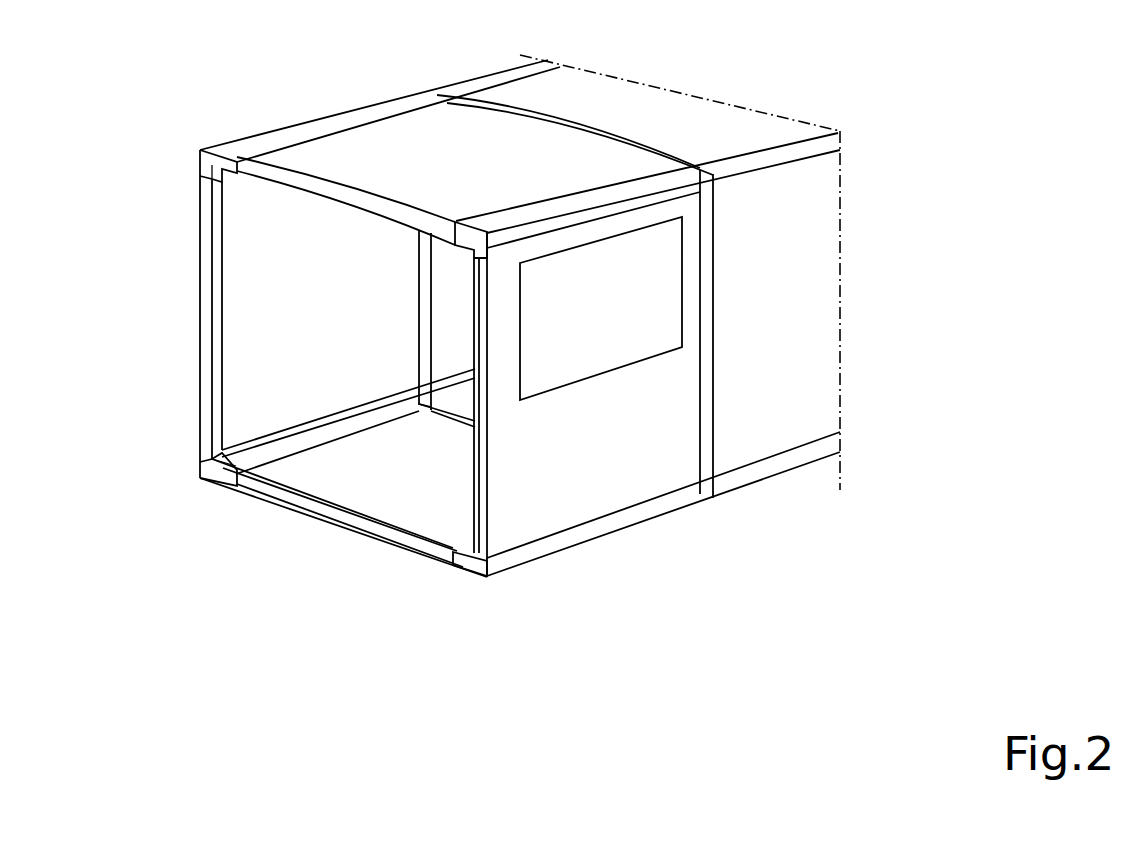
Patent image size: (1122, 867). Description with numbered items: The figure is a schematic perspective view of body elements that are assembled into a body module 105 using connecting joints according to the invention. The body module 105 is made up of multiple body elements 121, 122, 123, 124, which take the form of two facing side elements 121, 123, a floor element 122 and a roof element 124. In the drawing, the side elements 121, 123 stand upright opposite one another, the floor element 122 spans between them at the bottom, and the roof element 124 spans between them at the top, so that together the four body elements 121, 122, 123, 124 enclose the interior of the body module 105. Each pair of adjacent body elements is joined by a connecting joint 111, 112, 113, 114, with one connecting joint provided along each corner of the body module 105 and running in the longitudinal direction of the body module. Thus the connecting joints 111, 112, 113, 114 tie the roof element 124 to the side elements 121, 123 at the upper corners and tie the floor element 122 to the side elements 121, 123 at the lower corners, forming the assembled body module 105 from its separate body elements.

The body module 105 is at (326, 100).
The connecting joint 111 is at (465, 565).
The connecting joint 112 is at (476, 240).
The connecting joint 113 is at (203, 471).
The connecting joint 114 is at (205, 162).
The side element 121 is at (463, 355).
The floor element 122 is at (290, 526).
The side element 123 is at (190, 338).
The roof element 124 is at (312, 203).